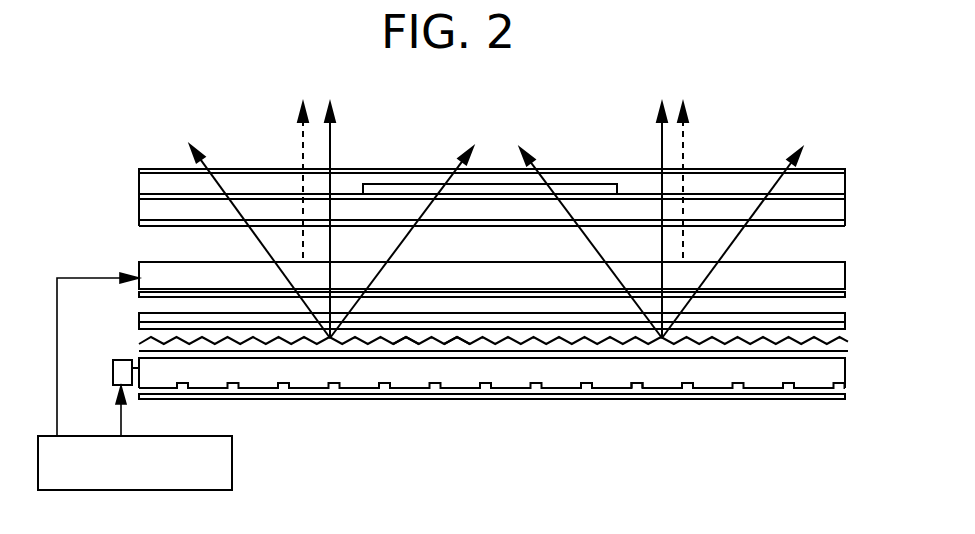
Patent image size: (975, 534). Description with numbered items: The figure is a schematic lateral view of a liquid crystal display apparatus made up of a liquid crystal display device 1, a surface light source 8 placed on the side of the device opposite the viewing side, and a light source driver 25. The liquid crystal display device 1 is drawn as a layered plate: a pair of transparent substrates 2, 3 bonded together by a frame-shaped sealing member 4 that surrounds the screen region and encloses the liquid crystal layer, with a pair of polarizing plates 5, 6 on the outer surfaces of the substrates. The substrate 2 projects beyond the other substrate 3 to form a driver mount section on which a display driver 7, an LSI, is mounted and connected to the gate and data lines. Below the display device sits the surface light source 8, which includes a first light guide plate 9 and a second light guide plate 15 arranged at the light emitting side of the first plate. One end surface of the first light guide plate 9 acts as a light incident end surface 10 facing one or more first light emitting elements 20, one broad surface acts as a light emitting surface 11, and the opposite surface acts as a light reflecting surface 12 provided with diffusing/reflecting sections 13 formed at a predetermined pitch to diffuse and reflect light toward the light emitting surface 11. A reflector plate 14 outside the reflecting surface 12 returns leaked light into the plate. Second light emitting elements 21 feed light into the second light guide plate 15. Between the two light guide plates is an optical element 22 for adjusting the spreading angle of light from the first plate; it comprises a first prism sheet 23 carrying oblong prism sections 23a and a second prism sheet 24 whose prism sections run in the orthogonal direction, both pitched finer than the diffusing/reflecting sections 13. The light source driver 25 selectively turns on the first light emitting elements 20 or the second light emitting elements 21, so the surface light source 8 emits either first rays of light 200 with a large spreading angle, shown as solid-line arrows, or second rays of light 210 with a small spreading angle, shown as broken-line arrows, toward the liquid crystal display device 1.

The liquid crystal display device 1 is at (838, 152).
The transparent substrate 2 is at (147, 209).
The transparent substrate 3 is at (147, 183).
The sealing member 4 is at (748, 200).
The polarizing plate 5 is at (147, 228).
The polarizing plate 6 is at (148, 168).
The display driver 7 is at (380, 192).
The surface light source 8 is at (853, 244).
The first light guide plate 9 is at (848, 374).
The light incident end surface 10 is at (128, 360).
The light emitting surface 11 is at (355, 358).
The light reflecting surface 12 is at (516, 389).
The diffusing/reflecting sections 13 is at (585, 386).
The reflector plate 14 is at (688, 399).
The second light guide plate 15 is at (770, 298).
The first light emitting elements 20 is at (113, 372).
The second light emitting elements 21 is at (845, 282).
The optical element 22 is at (852, 314).
The first prism sheet 23 is at (308, 345).
The oblong prism sections 23a is at (407, 340).
The second prism sheet 24 is at (827, 322).
The light source driver 25 is at (232, 476).
The first rays of light 200 is at (532, 160).
The second rays of light 210 is at (300, 141).